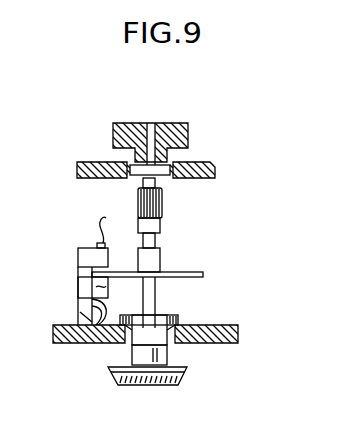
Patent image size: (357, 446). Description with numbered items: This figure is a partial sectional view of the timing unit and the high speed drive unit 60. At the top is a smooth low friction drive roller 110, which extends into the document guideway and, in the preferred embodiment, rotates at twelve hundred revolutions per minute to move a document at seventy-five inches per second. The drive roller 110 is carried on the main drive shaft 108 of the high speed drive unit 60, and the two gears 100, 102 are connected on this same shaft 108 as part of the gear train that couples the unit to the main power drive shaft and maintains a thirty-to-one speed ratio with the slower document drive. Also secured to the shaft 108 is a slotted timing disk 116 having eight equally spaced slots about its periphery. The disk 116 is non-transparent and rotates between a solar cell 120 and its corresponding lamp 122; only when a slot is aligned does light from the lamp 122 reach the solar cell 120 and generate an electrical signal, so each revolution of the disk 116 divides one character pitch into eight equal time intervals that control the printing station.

The high speed drive unit 60 is at (218, 132).
The gear 100 is at (163, 207).
The gear 102 is at (182, 372).
The main drive shaft 108 is at (157, 303).
The drive roller 110 is at (121, 123).
The slotted timing disk 116 is at (196, 272).
The solar cell 120 is at (75, 283).
The lamp 122 is at (99, 243).